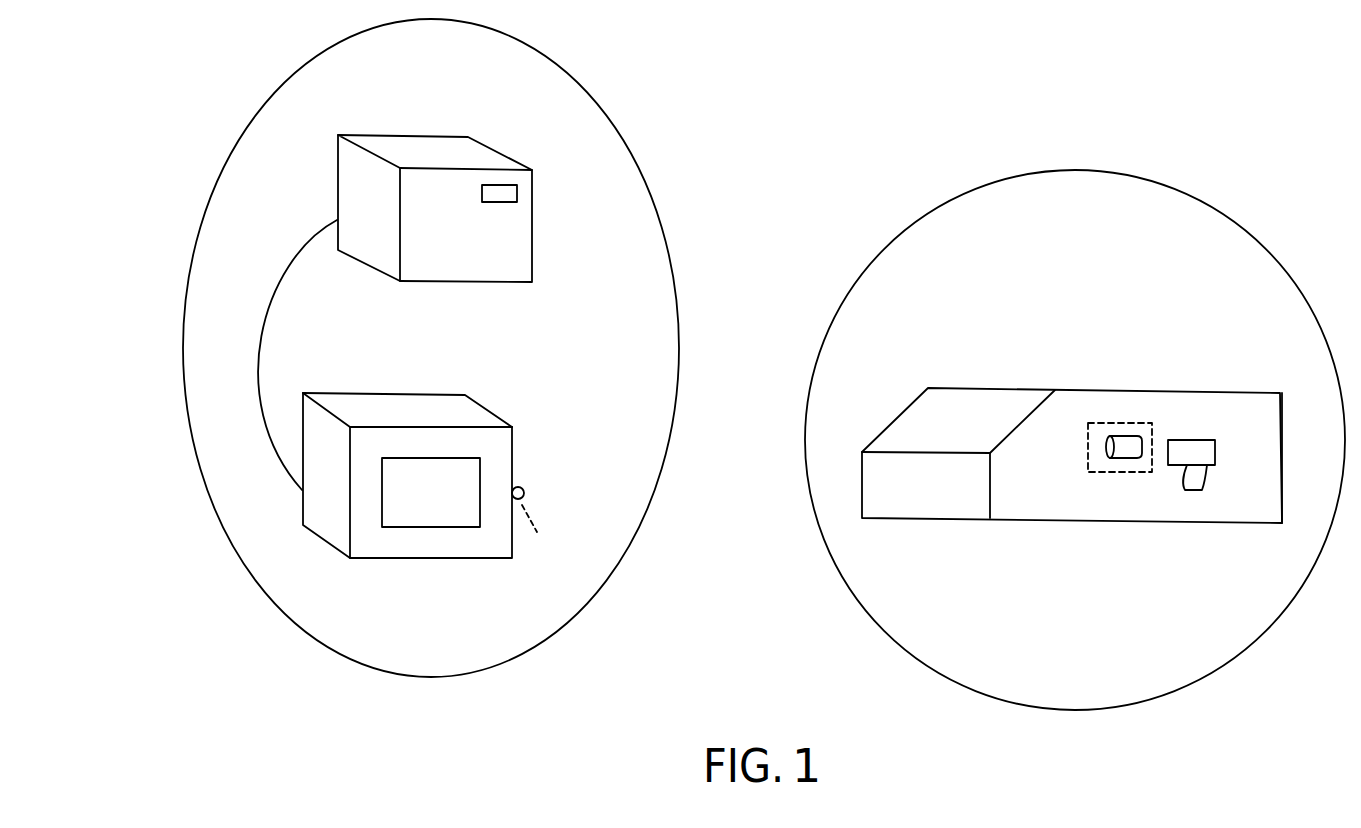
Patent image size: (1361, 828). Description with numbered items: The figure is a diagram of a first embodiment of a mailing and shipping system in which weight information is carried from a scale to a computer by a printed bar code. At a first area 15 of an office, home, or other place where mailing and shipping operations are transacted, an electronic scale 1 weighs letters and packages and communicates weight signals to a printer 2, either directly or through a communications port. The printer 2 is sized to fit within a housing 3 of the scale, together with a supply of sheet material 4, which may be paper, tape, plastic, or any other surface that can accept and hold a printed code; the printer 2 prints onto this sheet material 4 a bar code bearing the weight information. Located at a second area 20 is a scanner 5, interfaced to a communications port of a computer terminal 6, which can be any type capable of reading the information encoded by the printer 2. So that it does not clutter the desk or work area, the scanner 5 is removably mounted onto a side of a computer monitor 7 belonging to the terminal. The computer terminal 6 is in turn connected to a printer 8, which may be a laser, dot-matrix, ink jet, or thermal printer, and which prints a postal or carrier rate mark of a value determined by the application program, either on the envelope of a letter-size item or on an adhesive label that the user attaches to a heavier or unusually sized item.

The electronic scale 1 is at (1238, 390).
The printer 2 is at (1215, 452).
The housing 3 is at (1282, 485).
The sheet material 4 is at (1128, 434).
The scanner 5 is at (513, 478).
The computer terminal 6 is at (490, 412).
The computer monitor 7 is at (415, 395).
The printer 8 is at (507, 155).
The first area 15 is at (1298, 288).
The second area 20 is at (595, 97).